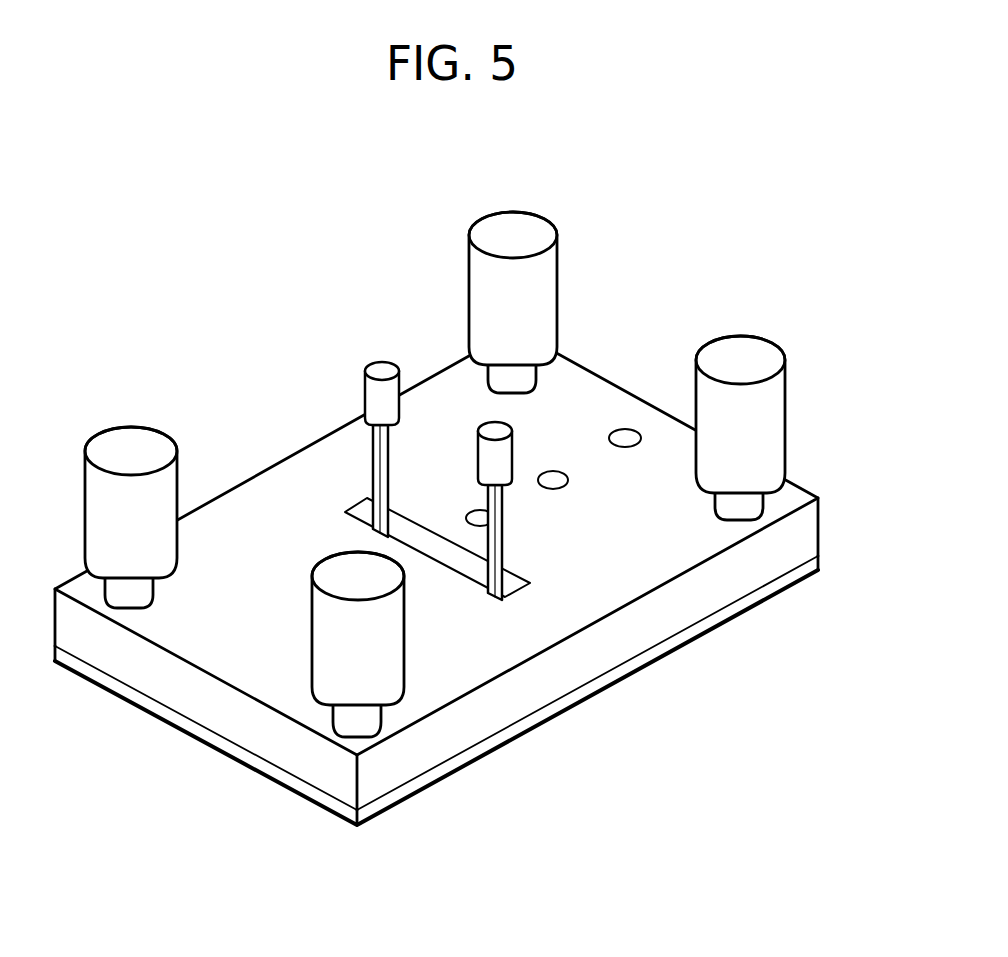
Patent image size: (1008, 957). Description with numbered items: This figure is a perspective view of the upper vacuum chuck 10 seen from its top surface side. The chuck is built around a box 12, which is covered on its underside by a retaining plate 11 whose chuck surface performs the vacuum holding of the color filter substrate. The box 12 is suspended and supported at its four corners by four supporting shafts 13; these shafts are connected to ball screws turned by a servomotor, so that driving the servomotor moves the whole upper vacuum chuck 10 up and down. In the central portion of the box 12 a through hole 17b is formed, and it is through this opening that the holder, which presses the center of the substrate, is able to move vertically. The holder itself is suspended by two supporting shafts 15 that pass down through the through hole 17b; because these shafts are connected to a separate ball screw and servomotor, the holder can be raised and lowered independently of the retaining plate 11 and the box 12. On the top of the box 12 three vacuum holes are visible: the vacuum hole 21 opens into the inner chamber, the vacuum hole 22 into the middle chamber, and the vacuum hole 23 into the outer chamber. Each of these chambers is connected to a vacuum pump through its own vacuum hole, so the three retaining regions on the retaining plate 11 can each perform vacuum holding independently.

The upper vacuum chuck 10 is at (326, 188).
The retaining plate 11 is at (808, 566).
The box 12 is at (803, 535).
The supporting shafts 13 is at (524, 228).
The supporting shafts 15 is at (380, 378).
The through hole 17b is at (522, 590).
The vacuum hole 21 is at (477, 513).
The vacuum hole 22 is at (559, 480).
The vacuum hole 23 is at (635, 438).